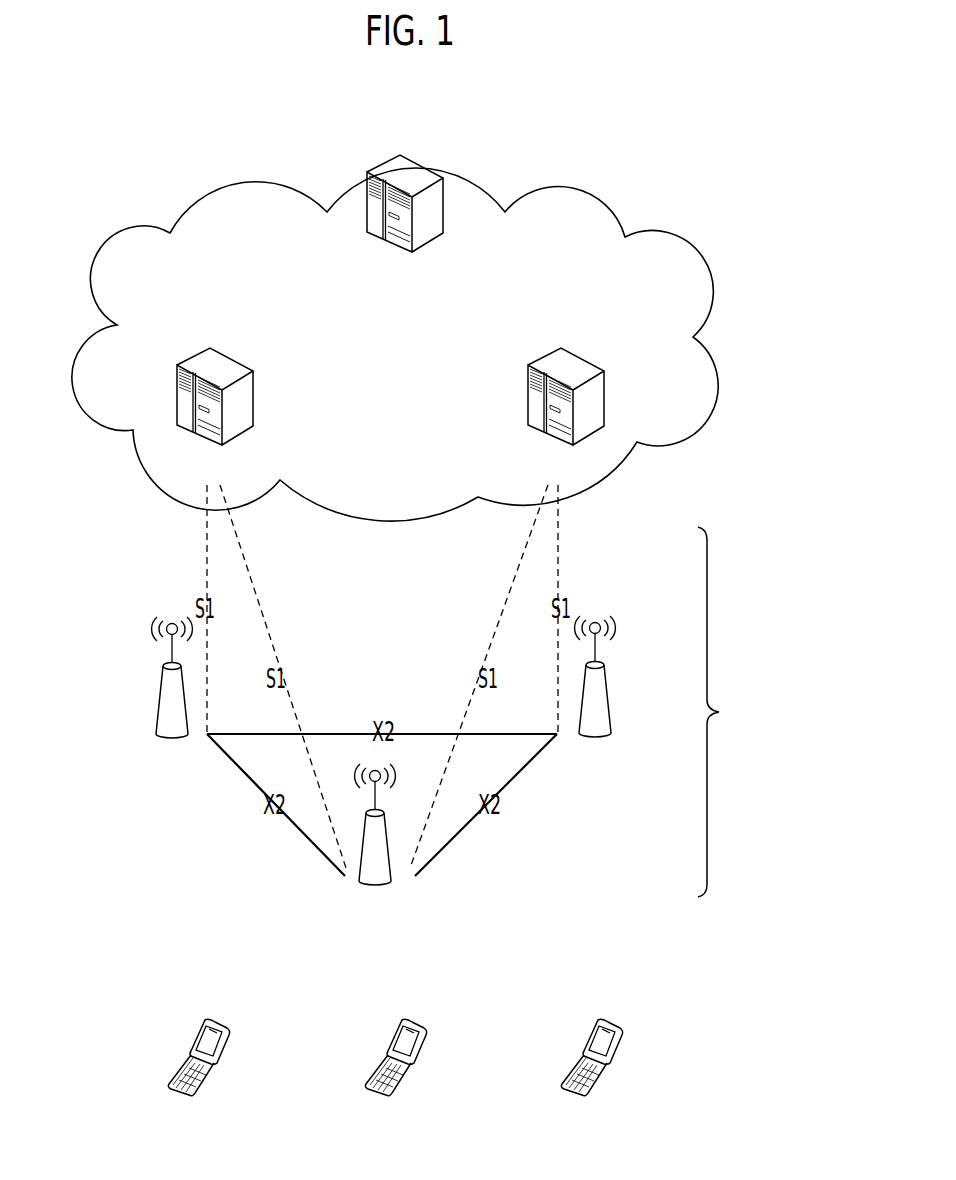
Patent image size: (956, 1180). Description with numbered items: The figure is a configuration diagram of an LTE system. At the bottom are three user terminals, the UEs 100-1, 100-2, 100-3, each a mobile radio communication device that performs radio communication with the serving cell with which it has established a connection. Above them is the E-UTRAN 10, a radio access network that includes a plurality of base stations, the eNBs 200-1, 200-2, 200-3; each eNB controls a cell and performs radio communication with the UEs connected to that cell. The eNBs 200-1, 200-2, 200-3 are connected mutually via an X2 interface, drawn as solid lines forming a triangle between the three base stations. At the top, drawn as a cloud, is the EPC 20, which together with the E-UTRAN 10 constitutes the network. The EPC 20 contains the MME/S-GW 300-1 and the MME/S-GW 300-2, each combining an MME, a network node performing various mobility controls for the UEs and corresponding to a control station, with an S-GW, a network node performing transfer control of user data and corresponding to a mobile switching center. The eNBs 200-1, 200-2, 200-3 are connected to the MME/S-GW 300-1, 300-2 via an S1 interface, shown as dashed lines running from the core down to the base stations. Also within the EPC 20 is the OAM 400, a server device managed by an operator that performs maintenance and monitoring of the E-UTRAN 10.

The E-UTRAN 10 is at (758, 712).
The EPC 20 is at (608, 206).
The UE 100-1 is at (214, 1022).
The UE 100-2 is at (411, 1022).
The UE 100-3 is at (607, 1022).
The eNB 200-1 is at (156, 698).
The eNB 200-2 is at (391, 858).
The eNB 200-3 is at (608, 683).
The MME/S-GW 300-1 is at (238, 362).
The MME/S-GW 300-2 is at (578, 360).
The OAM 400 is at (392, 137).